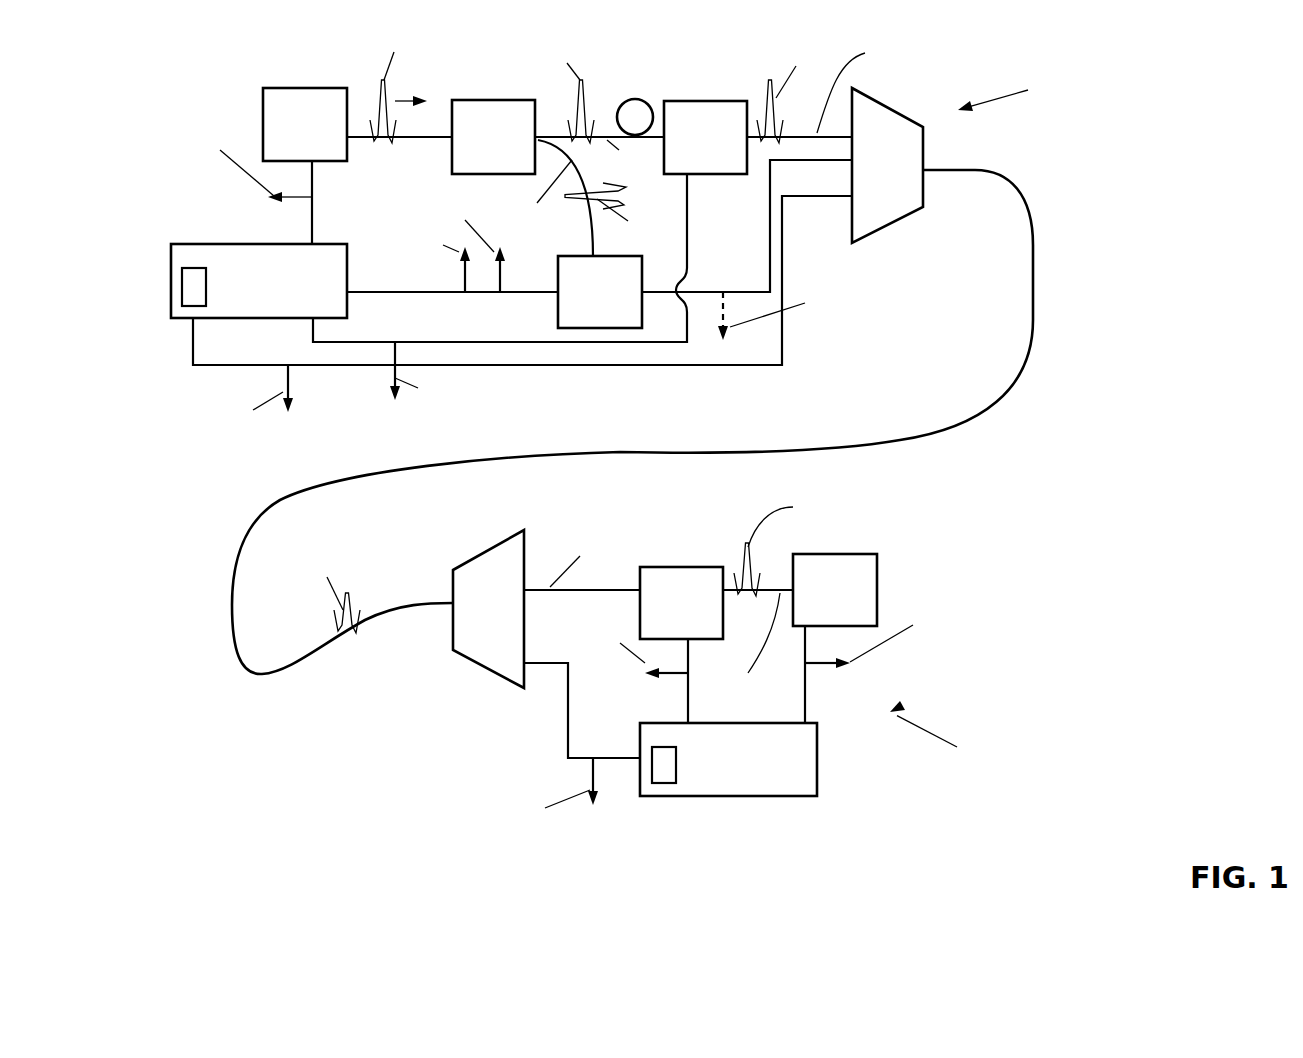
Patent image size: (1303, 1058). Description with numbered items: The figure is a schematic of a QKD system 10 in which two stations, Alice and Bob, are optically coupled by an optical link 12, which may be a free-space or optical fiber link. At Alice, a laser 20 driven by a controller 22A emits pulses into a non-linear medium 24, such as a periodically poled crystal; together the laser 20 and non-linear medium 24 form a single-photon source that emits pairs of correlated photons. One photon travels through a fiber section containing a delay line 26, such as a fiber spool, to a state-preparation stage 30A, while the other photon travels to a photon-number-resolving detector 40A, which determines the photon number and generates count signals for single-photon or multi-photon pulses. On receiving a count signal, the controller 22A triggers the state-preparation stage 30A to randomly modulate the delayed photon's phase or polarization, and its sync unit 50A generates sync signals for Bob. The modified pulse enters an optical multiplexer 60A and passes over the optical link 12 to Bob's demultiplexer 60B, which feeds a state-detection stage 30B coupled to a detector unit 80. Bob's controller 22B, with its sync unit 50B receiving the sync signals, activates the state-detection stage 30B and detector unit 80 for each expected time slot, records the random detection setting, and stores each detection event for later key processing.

The QKD system 10 is at (1108, 484).
The optical link 12 is at (1033, 247).
The laser 20 is at (322, 140).
The non-linear medium 24 is at (510, 152).
The delay line 26 is at (637, 99).
The state-preparation stage 30A is at (730, 152).
The photon-number-resolving detector 40A is at (624, 307).
The controller 22A is at (283, 296).
The sync unit 50A is at (193, 268).
The optical multiplexer 60A is at (912, 180).
The demultiplexer 60B is at (514, 628).
The state-detection stage 30B is at (706, 618).
The detector unit 80 is at (852, 605).
The controller 22B is at (753, 775).
The sync unit 50B is at (663, 783).